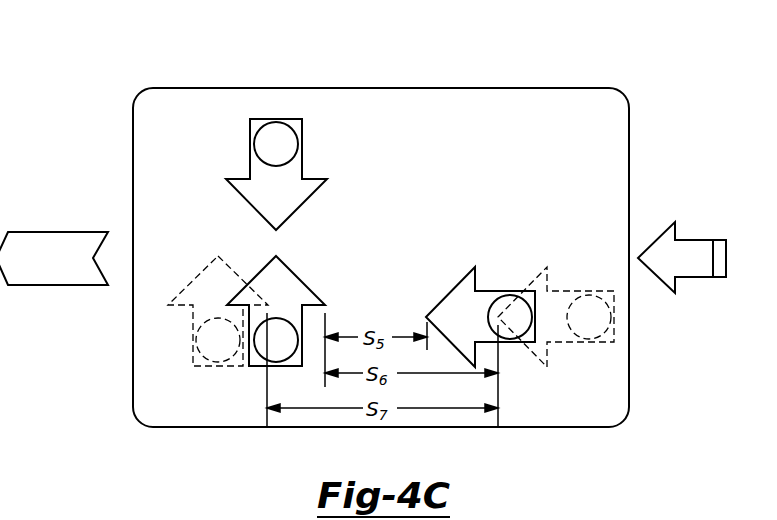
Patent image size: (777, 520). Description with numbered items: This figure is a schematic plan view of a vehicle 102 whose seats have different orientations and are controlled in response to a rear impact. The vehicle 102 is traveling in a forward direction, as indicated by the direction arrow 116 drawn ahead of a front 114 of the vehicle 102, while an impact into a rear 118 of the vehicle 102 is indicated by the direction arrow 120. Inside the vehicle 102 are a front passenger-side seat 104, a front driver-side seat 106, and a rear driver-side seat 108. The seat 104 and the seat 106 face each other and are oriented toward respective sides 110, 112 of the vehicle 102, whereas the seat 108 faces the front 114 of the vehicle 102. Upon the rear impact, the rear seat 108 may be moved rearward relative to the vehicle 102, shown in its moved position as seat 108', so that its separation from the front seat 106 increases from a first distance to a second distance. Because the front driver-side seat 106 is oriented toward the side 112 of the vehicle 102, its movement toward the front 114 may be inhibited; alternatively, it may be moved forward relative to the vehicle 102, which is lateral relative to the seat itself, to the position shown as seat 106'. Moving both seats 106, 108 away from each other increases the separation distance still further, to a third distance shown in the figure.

The vehicle 102 is at (577, 53).
The front passenger-side seat 104 is at (302, 150).
The front driver-side seat 106 is at (299, 305).
The front driver-side seat in moved position 106' is at (218, 282).
The rear driver-side seat 108 is at (480, 297).
The rear driver-side seat in moved position 108' is at (556, 293).
The side of the vehicle 110 is at (240, 430).
The side of the vehicle 112 is at (450, 88).
The front of the vehicle 114 is at (133, 373).
The direction arrow 116 is at (60, 232).
The rear of the vehicle 118 is at (629, 373).
The direction arrow 120 is at (700, 240).